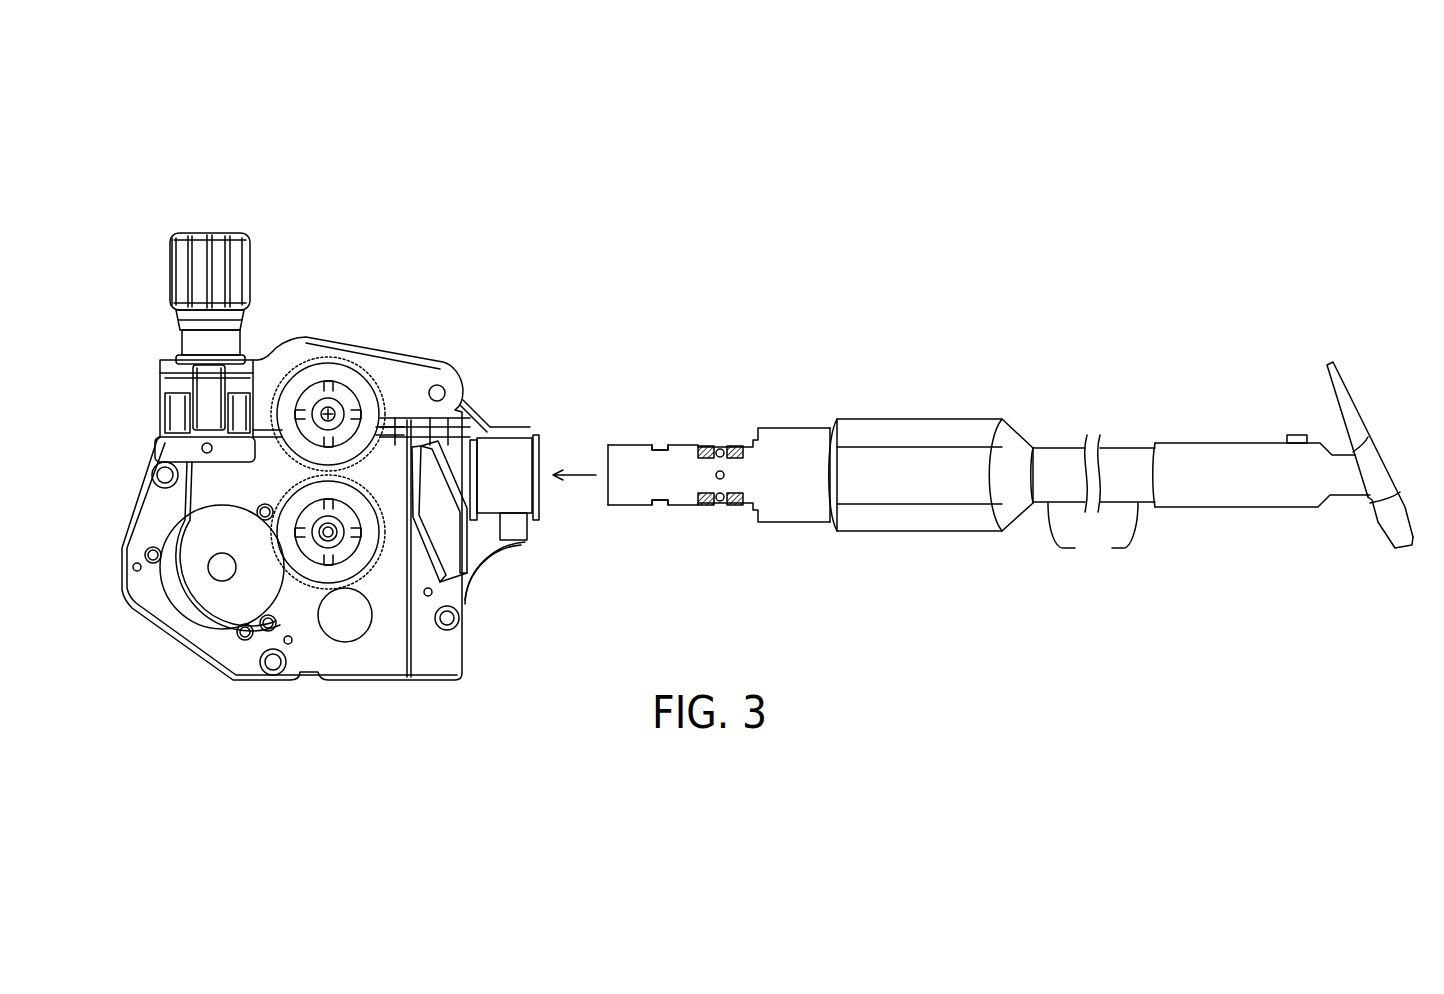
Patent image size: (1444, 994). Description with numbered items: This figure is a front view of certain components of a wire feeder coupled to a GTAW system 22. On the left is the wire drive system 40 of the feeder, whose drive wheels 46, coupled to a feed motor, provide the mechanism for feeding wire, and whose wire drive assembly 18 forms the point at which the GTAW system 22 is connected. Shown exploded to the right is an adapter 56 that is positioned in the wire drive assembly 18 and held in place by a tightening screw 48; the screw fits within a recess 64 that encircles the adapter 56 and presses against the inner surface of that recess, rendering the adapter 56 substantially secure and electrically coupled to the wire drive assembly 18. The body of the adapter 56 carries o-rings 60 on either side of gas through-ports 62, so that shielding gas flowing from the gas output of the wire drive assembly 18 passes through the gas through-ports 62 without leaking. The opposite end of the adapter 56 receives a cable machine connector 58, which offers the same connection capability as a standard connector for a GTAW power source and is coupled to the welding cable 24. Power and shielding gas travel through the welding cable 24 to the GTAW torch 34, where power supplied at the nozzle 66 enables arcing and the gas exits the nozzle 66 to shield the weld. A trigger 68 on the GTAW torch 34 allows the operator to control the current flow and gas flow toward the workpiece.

The wire drive system 40 is at (475, 292).
The drive wheels 46 is at (372, 527).
The tightening screw 48 is at (450, 549).
The wire drive assembly 18 is at (537, 513).
The adapter 56 is at (770, 403).
The recess 64 is at (660, 448).
The o-rings 60 is at (735, 446).
The gas through-ports 62 is at (720, 500).
The cable machine connector 58 is at (922, 418).
The GTAW system 22 is at (1155, 380).
The welding cable 24 is at (1093, 534).
The trigger 68 is at (1300, 435).
The GTAW torch 34 is at (1353, 397).
The nozzle 66 is at (1405, 552).